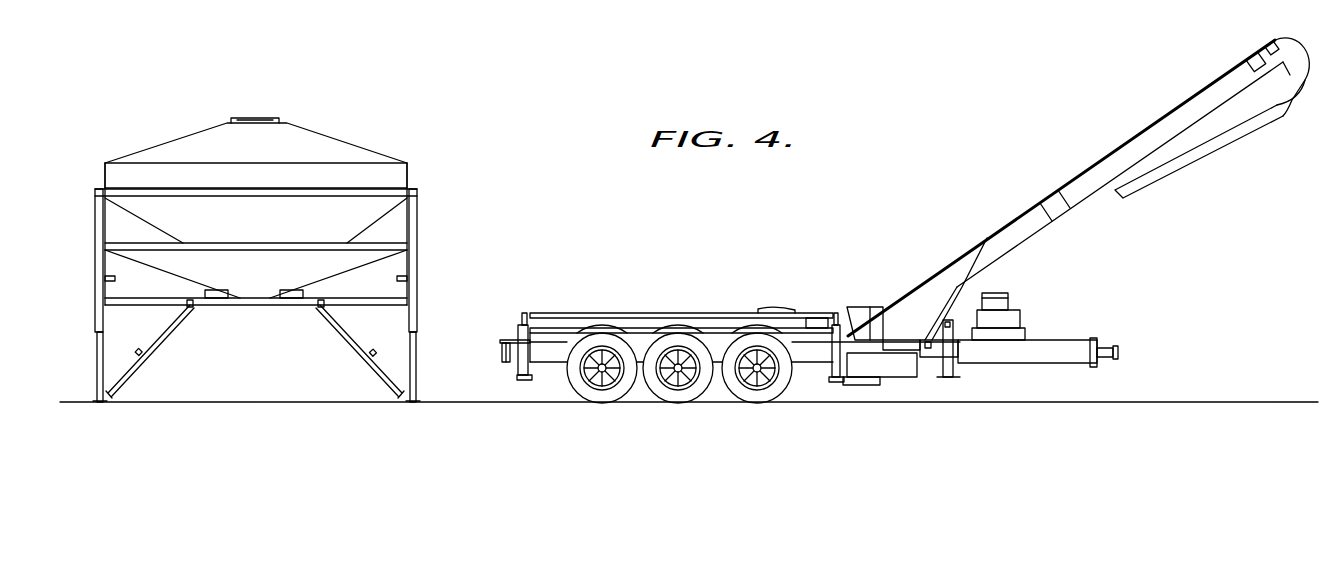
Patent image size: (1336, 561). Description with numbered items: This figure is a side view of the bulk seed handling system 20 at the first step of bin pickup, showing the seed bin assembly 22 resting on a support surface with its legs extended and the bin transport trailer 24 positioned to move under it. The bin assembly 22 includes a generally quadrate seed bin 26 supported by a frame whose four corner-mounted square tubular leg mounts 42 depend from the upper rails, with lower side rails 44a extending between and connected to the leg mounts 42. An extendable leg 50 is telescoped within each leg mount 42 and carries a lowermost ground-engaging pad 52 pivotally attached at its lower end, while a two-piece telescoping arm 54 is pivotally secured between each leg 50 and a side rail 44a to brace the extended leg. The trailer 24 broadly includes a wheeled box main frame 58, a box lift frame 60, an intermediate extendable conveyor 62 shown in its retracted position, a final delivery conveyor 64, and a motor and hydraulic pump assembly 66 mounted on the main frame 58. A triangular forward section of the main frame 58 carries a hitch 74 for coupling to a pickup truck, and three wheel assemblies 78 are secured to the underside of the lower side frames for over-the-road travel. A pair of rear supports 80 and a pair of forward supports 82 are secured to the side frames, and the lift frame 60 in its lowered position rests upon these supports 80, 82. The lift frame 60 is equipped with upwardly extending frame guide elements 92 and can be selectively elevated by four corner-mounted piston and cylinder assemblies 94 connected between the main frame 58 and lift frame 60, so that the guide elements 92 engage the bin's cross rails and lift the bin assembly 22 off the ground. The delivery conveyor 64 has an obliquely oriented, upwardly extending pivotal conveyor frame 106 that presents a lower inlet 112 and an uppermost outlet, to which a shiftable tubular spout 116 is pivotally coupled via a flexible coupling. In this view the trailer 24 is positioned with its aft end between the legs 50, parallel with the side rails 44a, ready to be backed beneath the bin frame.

The bulk seed handling system 20 is at (546, 110).
The seed bin assembly 22 is at (160, 120).
The bin transport trailer 24 is at (871, 175).
The seed bin 26 is at (382, 153).
The leg mounts 42 is at (100, 252).
The side rails 44a is at (347, 303).
The extendable leg 50 is at (413, 367).
The ground-engaging pad 52 is at (93, 397).
The telescoping arm 54 is at (340, 339).
The main frame 58 is at (1003, 370).
The lift frame 60 is at (634, 301).
The intermediate conveyor 62 is at (766, 302).
The final delivery conveyor 64 is at (1142, 109).
The motor and hydraulic pump assembly 66 is at (1041, 297).
The hitch 74 is at (1118, 352).
The wheel assemblies 78 is at (651, 411).
The rear supports 80 is at (520, 338).
The forward supports 82 is at (812, 327).
The frame guide elements 92 is at (525, 313).
The piston and cylinder assemblies 94 is at (514, 371).
The conveyor frame 106 is at (1010, 233).
The lower inlet 112 is at (870, 310).
The tubular spout 116 is at (1213, 142).